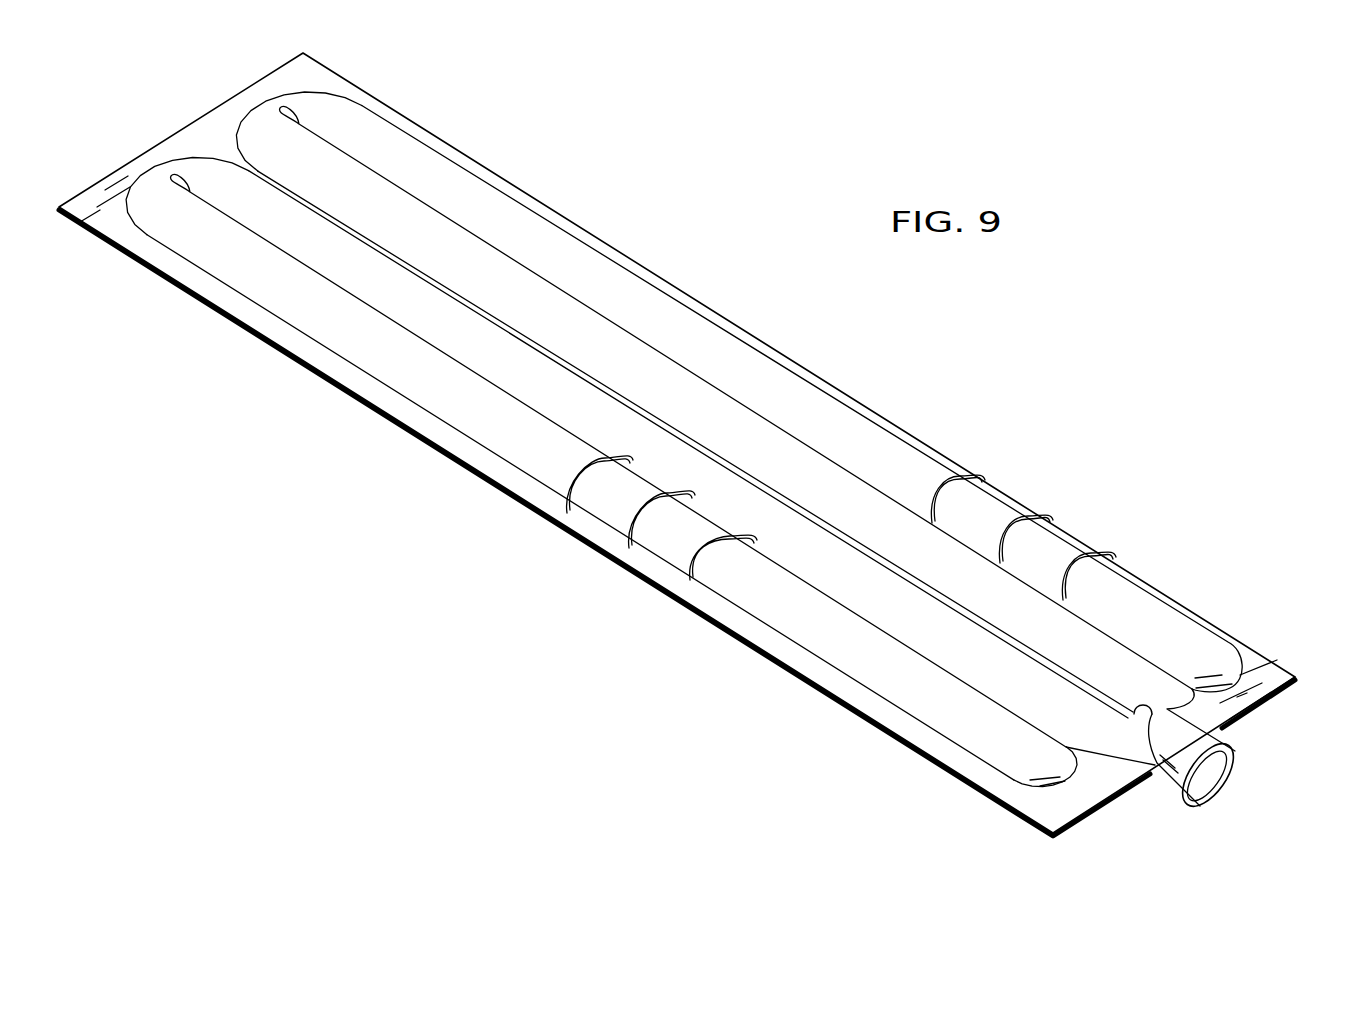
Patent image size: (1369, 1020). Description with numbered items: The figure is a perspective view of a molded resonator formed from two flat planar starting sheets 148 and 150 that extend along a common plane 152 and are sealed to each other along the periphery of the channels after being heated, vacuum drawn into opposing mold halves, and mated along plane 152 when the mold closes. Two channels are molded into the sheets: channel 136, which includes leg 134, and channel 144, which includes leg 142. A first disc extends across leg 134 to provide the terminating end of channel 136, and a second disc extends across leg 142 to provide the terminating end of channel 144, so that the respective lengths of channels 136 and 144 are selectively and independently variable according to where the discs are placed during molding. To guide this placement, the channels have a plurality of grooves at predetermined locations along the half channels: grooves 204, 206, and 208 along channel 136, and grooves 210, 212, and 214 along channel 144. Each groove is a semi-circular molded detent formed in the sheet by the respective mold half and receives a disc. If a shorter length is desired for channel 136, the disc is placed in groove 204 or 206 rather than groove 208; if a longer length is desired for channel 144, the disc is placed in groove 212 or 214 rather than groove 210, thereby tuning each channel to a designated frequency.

The leg 134 is at (851, 420).
The channel 136 is at (954, 569).
The leg 142 is at (475, 428).
The channel 144 is at (969, 648).
The starting sheet 148 is at (1296, 677).
The starting sheet 150 is at (1296, 680).
The plane 152 is at (1300, 677).
The groove 204 is at (975, 478).
The groove 206 is at (1036, 521).
The groove 208 is at (1105, 562).
The groove 210 is at (566, 514).
The groove 212 is at (628, 549).
The groove 214 is at (690, 583).